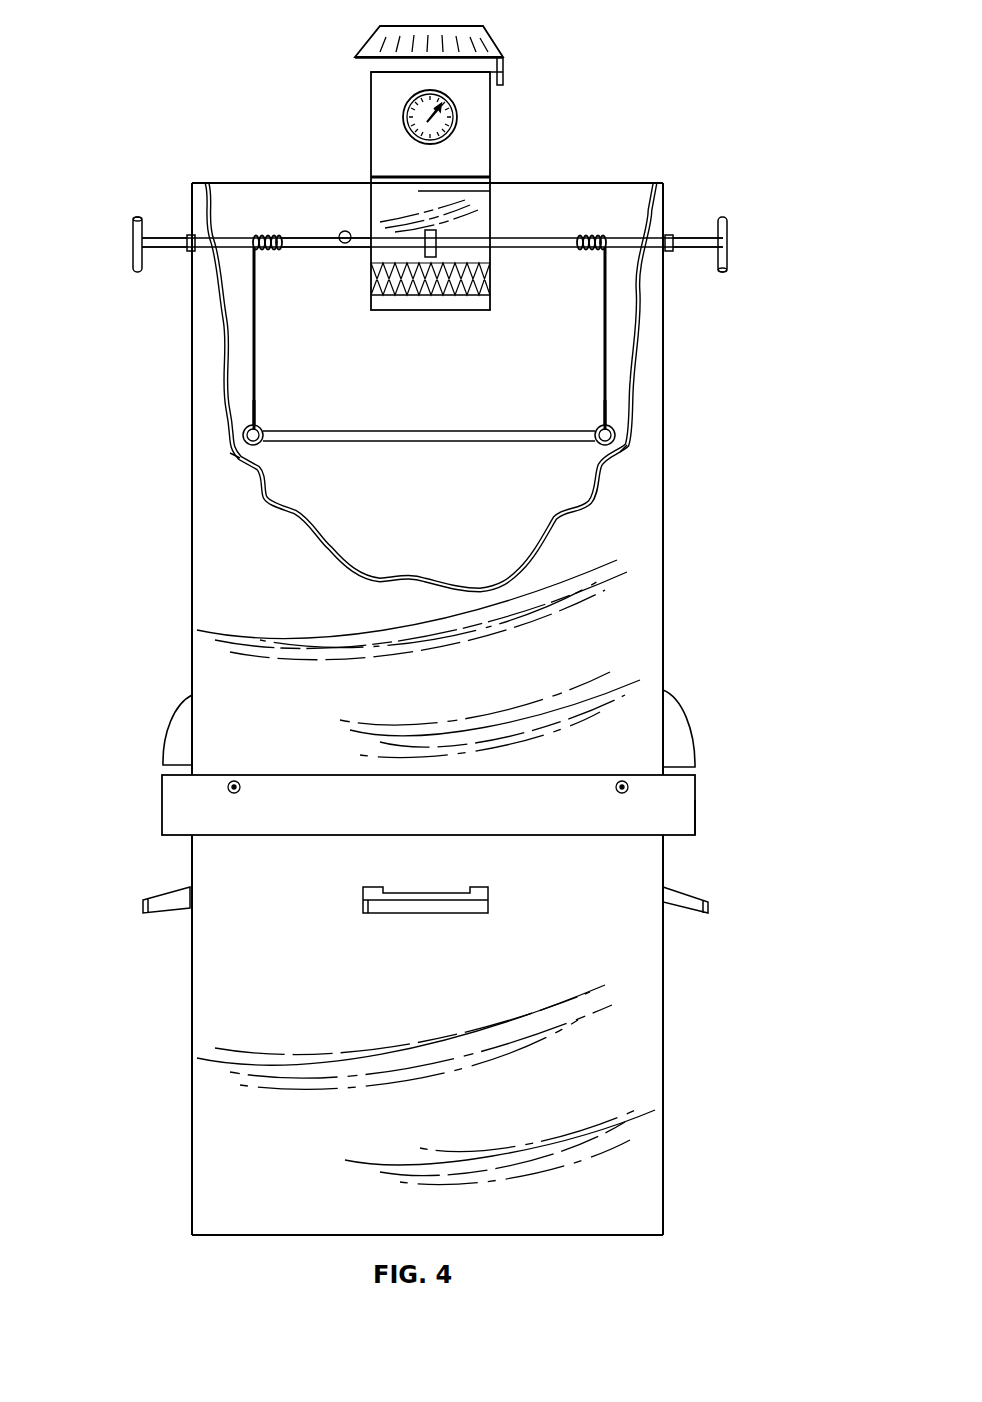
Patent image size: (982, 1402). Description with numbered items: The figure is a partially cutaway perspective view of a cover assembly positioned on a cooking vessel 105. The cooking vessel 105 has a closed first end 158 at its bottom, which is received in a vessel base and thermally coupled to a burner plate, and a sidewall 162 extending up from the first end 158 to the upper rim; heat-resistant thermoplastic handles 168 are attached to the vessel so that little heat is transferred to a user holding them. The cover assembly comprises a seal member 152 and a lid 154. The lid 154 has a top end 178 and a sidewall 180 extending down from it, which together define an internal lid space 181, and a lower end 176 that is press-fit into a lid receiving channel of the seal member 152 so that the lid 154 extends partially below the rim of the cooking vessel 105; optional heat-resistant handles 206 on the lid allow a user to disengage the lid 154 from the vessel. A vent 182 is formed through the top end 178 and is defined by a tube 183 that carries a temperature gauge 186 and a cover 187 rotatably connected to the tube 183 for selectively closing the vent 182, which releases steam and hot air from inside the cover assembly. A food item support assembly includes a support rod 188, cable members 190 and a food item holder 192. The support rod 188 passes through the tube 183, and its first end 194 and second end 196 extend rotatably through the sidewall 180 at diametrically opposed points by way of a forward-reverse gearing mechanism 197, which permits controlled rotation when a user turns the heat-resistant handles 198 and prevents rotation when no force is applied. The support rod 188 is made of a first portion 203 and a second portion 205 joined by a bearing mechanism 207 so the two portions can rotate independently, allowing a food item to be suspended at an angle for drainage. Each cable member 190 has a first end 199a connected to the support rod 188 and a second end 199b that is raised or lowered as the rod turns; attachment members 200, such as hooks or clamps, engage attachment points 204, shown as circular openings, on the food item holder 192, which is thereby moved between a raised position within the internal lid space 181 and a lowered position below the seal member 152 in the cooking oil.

The cooking vessel 105 is at (664, 985).
The seal member 152 is at (695, 822).
The lid 154 is at (665, 353).
The closed first end 158 is at (246, 1237).
The sidewall 162 is at (663, 1066).
The handles 168 is at (455, 913).
The lower end 176 is at (670, 778).
The top end 178 is at (532, 183).
The sidewall 180 is at (192, 607).
The internal lid space 181 is at (447, 352).
The vent 182 is at (388, 66).
The tube 183 is at (490, 144).
The temperature gauge 186 is at (460, 116).
The cover 187 is at (432, 24).
The support rod 188 is at (350, 247).
The cable members 190 is at (254, 390).
The food item holder 192 is at (490, 442).
The first end 194 is at (166, 238).
The second end 196 is at (692, 236).
The forward-reverse gearing mechanism 197 is at (189, 252).
The handles 198 is at (134, 246).
The first end 199a is at (264, 236).
The second end 199b is at (254, 404).
The attachment members 200 is at (243, 448).
The first portion 203 is at (320, 236).
The attachment points 204 is at (262, 432).
The second portion 205 is at (556, 249).
The handles 206 is at (180, 712).
The bearing mechanism 207 is at (437, 236).